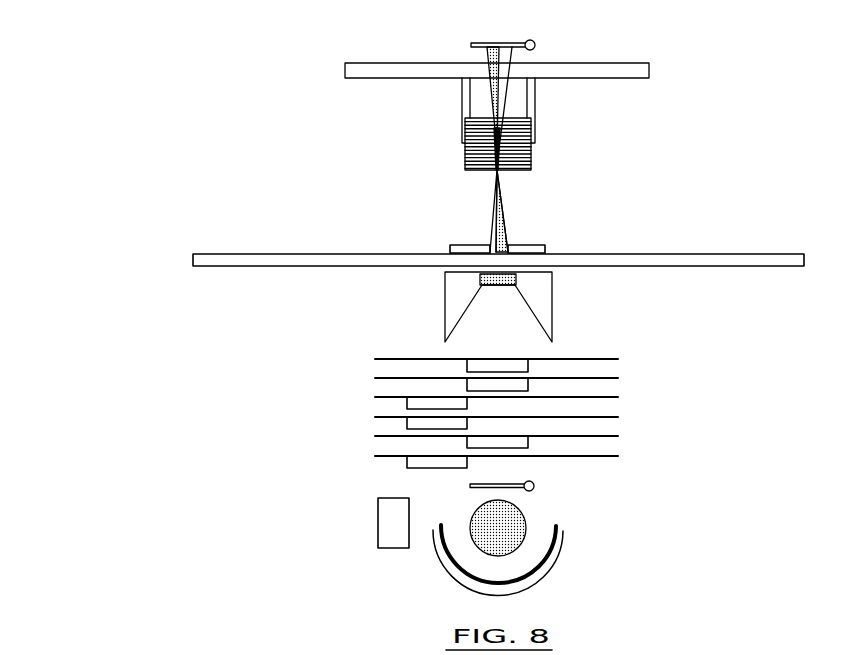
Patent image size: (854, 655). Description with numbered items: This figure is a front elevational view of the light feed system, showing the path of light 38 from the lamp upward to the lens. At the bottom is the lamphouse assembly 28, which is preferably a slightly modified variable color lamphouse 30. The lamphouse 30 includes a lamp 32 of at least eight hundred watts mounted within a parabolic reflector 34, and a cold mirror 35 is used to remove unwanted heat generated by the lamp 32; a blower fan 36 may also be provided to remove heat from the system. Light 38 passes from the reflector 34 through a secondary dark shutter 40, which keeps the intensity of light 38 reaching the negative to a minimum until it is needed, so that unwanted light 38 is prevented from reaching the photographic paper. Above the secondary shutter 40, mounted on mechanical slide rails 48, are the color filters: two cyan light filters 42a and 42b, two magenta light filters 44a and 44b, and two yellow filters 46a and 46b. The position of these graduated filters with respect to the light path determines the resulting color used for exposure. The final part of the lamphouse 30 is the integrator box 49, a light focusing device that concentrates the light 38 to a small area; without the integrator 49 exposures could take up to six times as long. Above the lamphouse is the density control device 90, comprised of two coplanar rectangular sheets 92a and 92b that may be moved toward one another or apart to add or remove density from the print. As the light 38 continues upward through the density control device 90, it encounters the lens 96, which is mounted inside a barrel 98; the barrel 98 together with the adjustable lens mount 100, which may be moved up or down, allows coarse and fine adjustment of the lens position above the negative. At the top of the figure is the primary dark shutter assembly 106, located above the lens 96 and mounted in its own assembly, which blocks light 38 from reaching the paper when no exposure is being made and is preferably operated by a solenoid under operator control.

The lamphouse assembly 28 is at (165, 437).
The variable color lamphouse 30 is at (602, 538).
The lamp 32 is at (512, 520).
The parabolic reflector 34 is at (442, 550).
The cold mirror 35 is at (460, 573).
The blower fan 36 is at (387, 530).
The light 38 is at (507, 210).
The secondary dark shutter 40 is at (507, 483).
The cyan light filter 42a is at (413, 461).
The cyan light filter 42b is at (528, 442).
The magenta light filter 44a is at (413, 421).
The magenta light filter 44b is at (413, 402).
The yellow filter 46a is at (523, 385).
The yellow filter 46b is at (522, 365).
The mechanical slide rails 48 is at (392, 359).
The integrator box 49 is at (542, 295).
The density control device 90 is at (532, 231).
The coplanar rectangular sheet 92a is at (450, 247).
The coplanar rectangular sheet 92b is at (543, 246).
The lens 96 is at (470, 152).
The barrel 98 is at (533, 97).
The adjustable lens mount 100 is at (633, 71).
The primary dark shutter assembly 106 is at (507, 43).